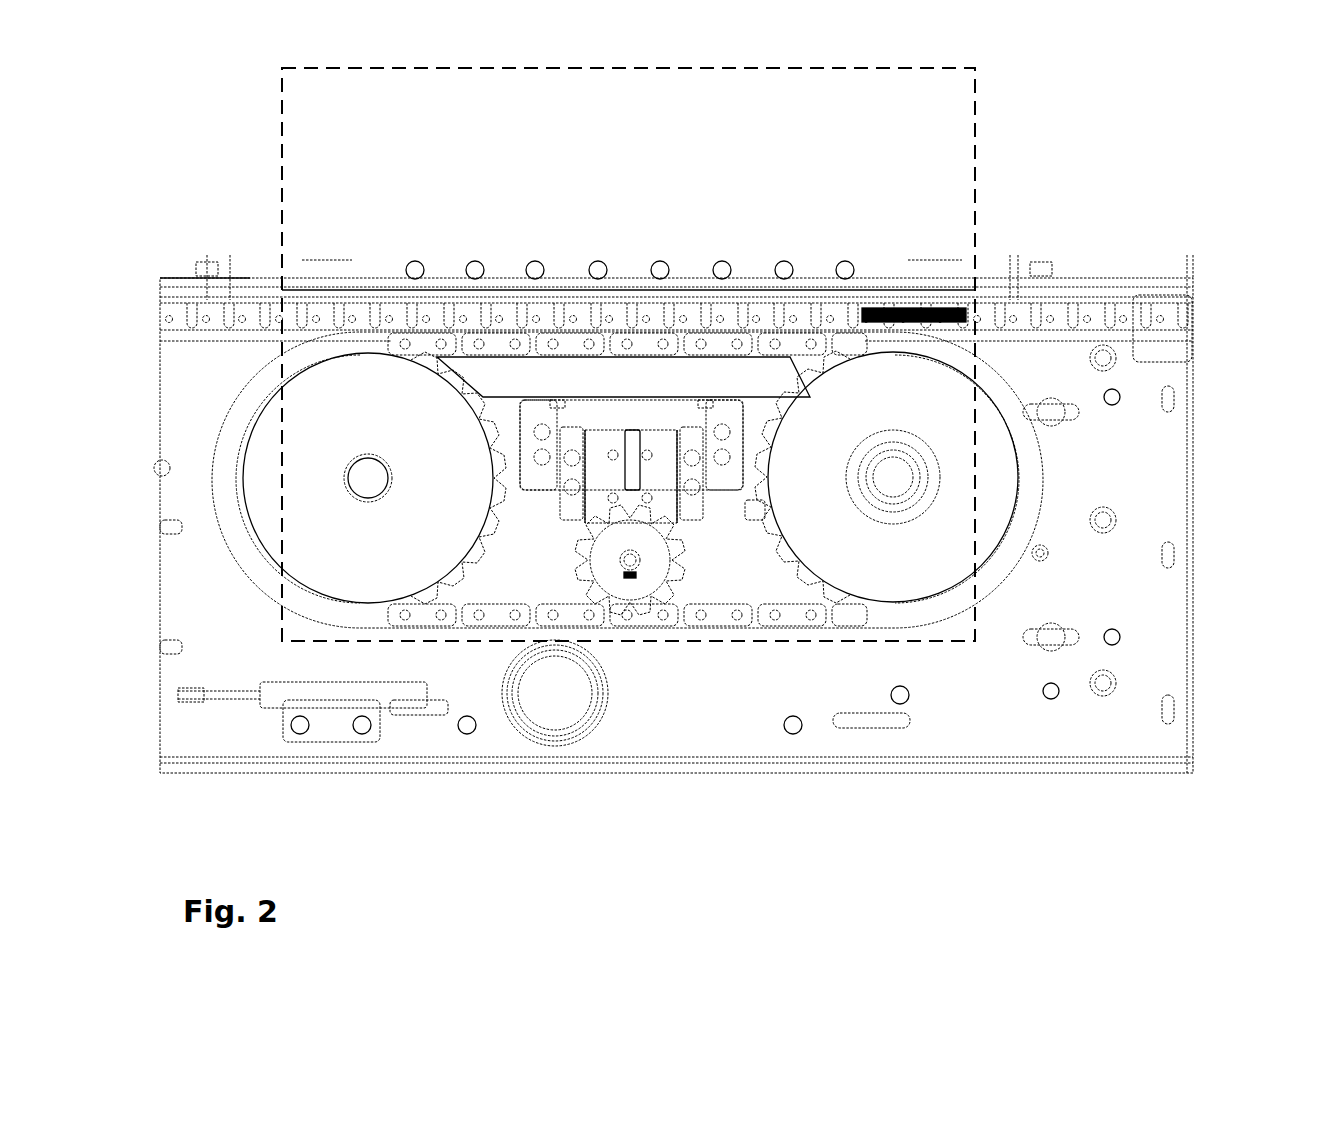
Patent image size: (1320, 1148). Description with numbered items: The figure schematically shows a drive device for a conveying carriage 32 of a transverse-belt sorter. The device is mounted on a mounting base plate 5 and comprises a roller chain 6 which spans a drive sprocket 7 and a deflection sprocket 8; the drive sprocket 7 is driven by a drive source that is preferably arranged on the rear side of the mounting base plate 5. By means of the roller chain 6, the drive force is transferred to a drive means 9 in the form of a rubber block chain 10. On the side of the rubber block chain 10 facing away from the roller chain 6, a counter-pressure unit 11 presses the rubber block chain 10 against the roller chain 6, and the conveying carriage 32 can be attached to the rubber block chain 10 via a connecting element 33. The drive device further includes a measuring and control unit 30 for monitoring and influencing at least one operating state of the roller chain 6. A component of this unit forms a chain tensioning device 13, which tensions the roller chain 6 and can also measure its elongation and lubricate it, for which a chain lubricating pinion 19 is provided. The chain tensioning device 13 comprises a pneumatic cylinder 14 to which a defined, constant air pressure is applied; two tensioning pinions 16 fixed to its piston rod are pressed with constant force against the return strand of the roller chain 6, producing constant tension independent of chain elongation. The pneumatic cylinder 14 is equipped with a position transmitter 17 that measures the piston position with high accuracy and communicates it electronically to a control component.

The mounting base plate 5 is at (1193, 607).
The roller chain 6 is at (445, 628).
The drive sprocket 7 is at (417, 390).
The deflection sprocket 8 is at (950, 410).
The drive means 9 is at (648, 395).
The rubber block chain 10 is at (207, 328).
The counter-pressure unit 11 is at (805, 280).
The chain tensioning device 13 is at (732, 528).
The pneumatic cylinder 14 is at (608, 385).
The tensioning pinion 16 is at (734, 712).
The position transmitter 17 is at (634, 435).
The chain lubricating pinion 19 is at (699, 592).
The measuring and control unit 30 is at (872, 687).
The conveying carriage 32 is at (977, 152).
The connecting element 33 is at (972, 285).